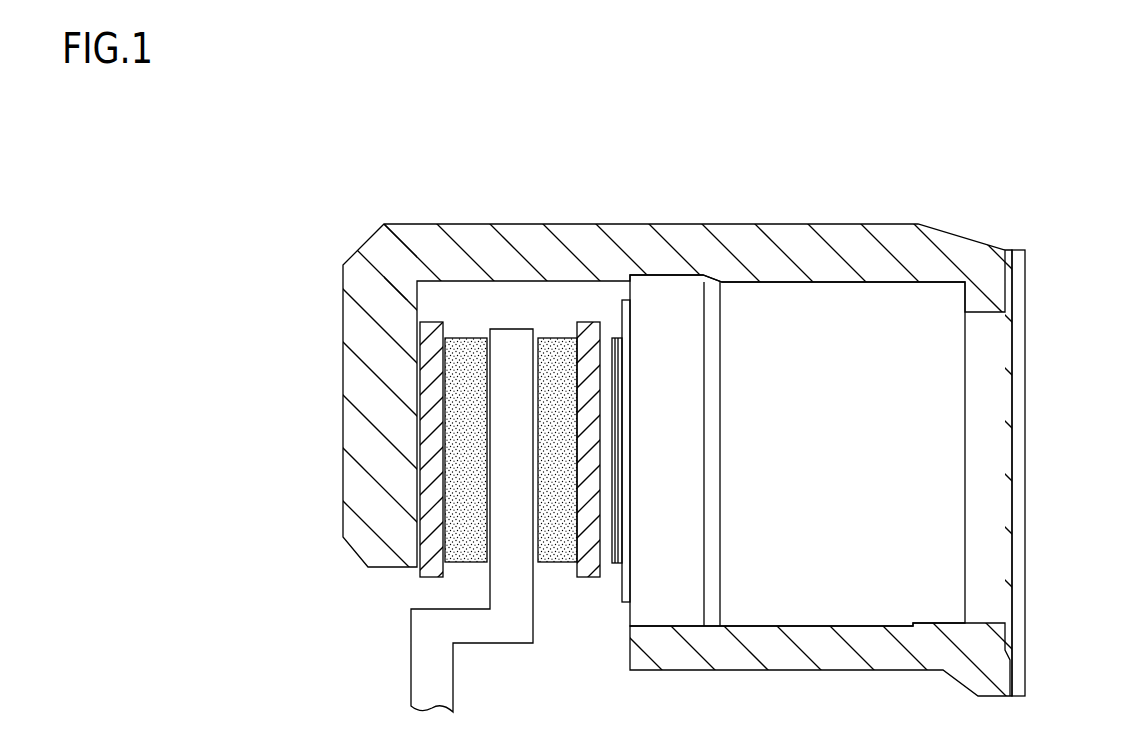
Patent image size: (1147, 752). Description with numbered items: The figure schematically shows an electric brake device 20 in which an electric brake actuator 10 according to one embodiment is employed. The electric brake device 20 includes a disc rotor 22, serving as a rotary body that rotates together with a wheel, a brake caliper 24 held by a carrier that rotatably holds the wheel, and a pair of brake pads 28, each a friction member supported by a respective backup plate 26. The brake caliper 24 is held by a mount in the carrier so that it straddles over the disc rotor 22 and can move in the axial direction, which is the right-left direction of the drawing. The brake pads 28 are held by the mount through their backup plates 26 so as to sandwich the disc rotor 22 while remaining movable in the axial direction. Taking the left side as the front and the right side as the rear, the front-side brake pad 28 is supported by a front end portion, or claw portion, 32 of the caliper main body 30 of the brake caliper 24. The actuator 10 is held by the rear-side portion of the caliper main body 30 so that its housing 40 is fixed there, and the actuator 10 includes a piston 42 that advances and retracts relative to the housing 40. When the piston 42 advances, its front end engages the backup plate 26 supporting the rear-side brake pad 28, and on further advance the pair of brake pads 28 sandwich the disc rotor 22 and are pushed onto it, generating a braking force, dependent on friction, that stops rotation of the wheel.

The electric brake actuator 10 is at (1046, 388).
The electric brake device 20 is at (655, 86).
The disc rotor 22 is at (497, 632).
The brake caliper 24 is at (792, 198).
The backup plate 26 is at (430, 328).
The brake pad 28 is at (467, 340).
The caliper main body 30 is at (668, 238).
The front end portion (claw portion) 32 is at (358, 383).
The housing 40 is at (870, 300).
The piston 42 is at (614, 565).